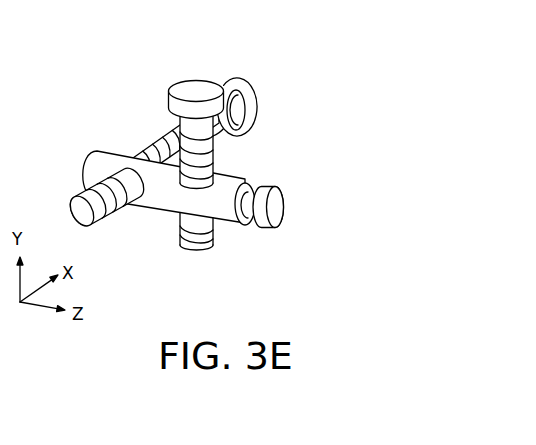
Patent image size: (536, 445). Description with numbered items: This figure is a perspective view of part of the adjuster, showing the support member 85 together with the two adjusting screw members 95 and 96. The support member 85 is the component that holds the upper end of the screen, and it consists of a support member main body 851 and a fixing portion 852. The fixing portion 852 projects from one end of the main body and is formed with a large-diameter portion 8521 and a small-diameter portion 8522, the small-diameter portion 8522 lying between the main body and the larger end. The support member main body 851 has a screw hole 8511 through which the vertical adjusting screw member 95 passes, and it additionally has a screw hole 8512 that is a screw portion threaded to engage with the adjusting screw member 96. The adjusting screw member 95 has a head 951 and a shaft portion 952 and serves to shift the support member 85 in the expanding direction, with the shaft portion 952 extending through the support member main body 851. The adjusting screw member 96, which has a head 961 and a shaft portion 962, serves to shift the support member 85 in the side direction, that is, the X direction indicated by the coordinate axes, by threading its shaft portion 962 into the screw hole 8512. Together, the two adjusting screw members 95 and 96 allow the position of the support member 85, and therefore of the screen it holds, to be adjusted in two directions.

The support member 85 is at (241, 225).
The support member main body 851 is at (236, 178).
The screw hole 8511 is at (179, 186).
The screw hole 8512 is at (149, 185).
The fixing portion 852 is at (326, 220).
The large-diameter portion 8521 is at (280, 206).
The small-diameter portion 8522 is at (248, 222).
The adjusting screw member 95 is at (226, 128).
The head 951 is at (200, 86).
The shaft portion 952 is at (215, 141).
The adjusting screw member 96 is at (220, 116).
The head 961 is at (256, 90).
The shaft portion 962 is at (152, 145).